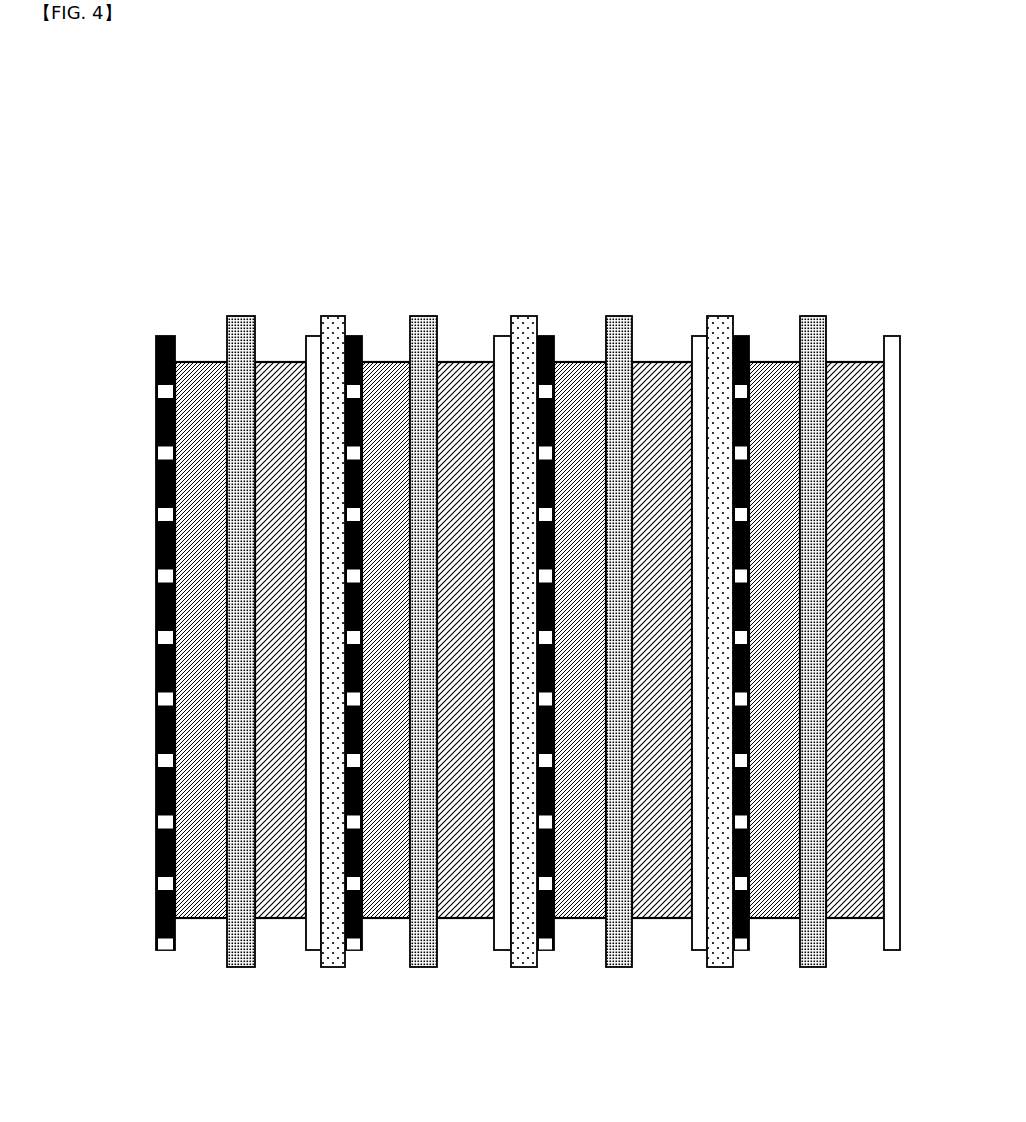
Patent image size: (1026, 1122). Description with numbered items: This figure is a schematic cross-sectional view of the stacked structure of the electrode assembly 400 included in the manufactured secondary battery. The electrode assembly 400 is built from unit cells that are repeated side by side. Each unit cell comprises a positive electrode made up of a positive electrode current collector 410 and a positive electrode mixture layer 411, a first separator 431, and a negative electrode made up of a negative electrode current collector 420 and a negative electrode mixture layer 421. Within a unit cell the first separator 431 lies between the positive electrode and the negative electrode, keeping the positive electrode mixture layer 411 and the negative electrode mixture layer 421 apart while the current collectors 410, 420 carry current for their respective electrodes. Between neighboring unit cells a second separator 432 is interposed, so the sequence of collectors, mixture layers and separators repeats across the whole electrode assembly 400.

The electrode assembly 400 is at (102, 146).
The positive electrode current collector 410 is at (503, 338).
The positive electrode mixture layer 411 is at (465, 918).
The negative electrode current collector 420 is at (357, 337).
The negative electrode mixture layer 421 is at (382, 918).
The first separator 431 is at (430, 315).
The second separator 432 is at (333, 315).